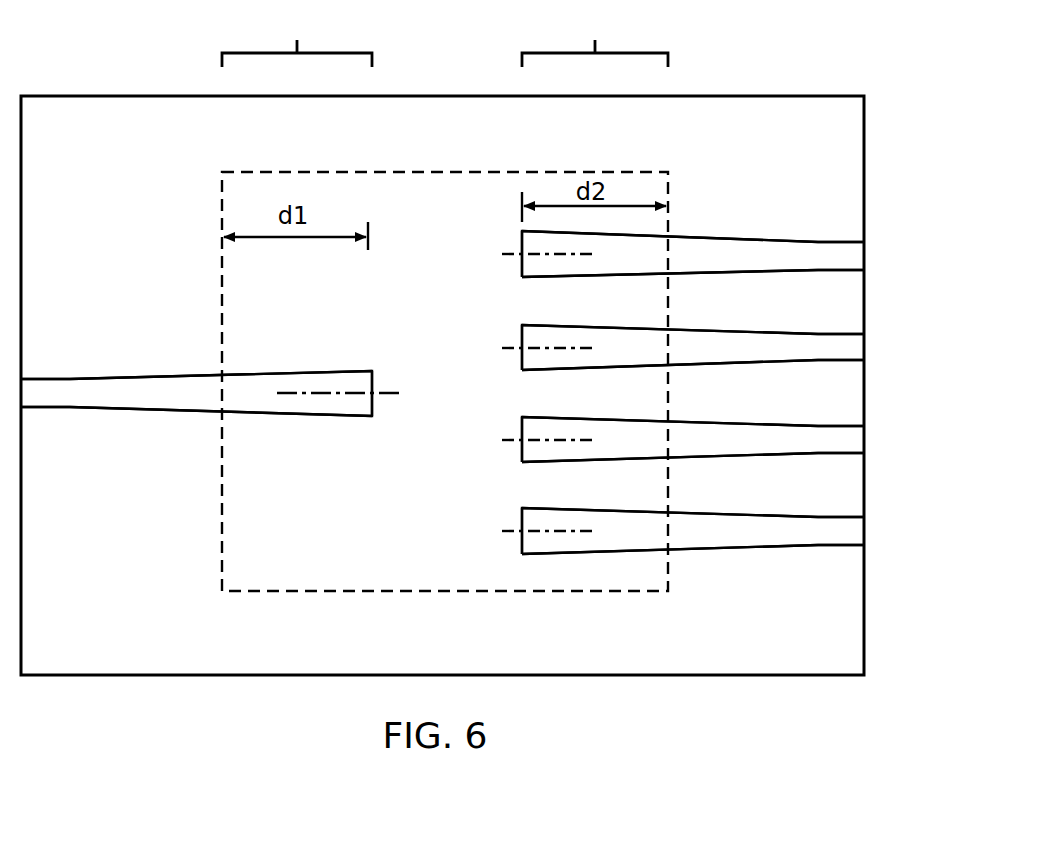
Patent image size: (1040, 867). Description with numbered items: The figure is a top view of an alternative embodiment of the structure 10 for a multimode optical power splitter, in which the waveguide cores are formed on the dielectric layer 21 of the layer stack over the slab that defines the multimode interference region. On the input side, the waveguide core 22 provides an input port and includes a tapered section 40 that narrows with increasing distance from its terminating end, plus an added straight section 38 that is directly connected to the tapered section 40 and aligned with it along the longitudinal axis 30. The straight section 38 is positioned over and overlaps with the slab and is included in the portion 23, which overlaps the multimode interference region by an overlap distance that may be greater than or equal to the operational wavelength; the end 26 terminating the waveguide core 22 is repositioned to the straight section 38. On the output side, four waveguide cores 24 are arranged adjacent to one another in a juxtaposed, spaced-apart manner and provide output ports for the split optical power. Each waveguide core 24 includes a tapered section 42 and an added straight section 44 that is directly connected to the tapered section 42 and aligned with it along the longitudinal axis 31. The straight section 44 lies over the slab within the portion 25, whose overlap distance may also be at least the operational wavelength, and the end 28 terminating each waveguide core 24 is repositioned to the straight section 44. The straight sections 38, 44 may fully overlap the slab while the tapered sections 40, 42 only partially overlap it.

The structure 10 is at (198, 166).
The dielectric layer 21 is at (64, 641).
The waveguide core 22 is at (143, 365).
The portion 23 is at (297, 37).
The waveguide cores 24 is at (726, 228).
The portion 25 is at (595, 37).
The end 26 is at (373, 410).
The end 28 is at (522, 360).
The longitudinal axis 30 is at (410, 392).
The longitudinal axis 31 is at (506, 348).
The straight section 38 is at (347, 405).
The tapered section 40 is at (200, 405).
The tapered section 42 is at (702, 345).
The straight section 44 is at (548, 358).